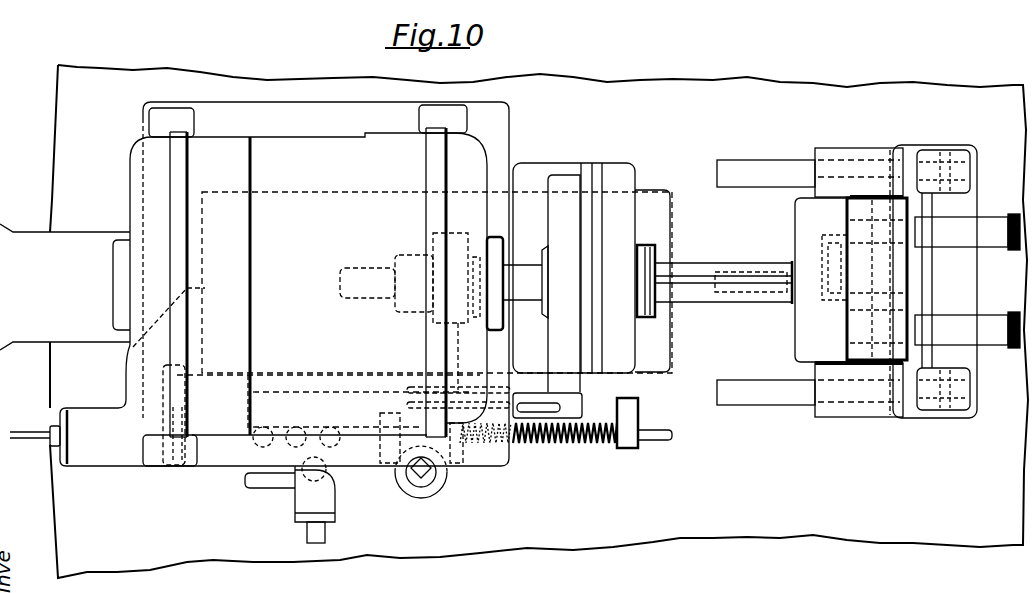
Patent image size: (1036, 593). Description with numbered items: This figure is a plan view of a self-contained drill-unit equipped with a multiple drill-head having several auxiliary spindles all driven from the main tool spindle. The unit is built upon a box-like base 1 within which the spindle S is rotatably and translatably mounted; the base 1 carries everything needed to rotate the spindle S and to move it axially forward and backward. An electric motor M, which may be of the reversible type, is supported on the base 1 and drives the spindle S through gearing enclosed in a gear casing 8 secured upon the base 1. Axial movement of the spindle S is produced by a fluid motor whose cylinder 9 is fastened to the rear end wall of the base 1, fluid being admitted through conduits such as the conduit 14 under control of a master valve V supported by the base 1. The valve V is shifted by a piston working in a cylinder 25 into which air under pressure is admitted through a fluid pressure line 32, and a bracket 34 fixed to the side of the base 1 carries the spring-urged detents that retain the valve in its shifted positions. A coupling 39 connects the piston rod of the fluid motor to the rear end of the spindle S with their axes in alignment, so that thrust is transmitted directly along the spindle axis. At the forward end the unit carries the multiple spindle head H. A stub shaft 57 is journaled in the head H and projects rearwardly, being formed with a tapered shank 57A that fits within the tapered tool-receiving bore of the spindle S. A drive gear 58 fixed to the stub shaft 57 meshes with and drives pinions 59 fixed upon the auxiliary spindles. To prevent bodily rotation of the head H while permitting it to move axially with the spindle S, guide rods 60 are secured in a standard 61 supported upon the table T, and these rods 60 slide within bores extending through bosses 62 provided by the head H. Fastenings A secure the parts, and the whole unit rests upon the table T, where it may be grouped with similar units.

The base 1 is at (650, 213).
The gear casing 8 is at (558, 228).
The cylinder 9 is at (65, 287).
The fluid pressure conduit 14 is at (246, 485).
The cylinder 25 is at (128, 405).
The fluid pressure line 32 is at (22, 430).
The bracket 34 is at (449, 480).
The coupling 39 is at (416, 252).
The stub shaft 57 is at (877, 282).
The tapered shank 57A is at (755, 270).
The drive gear 58 is at (842, 308).
The pinions 59 is at (820, 212).
The guide rods 60 is at (762, 165).
The standard 61 is at (970, 283).
The bosses 62 is at (870, 150).
The electric motor M is at (401, 295).
The spindle S is at (700, 305).
The multiple spindle head H is at (868, 288).
The table T is at (539, 321).
The master valve V is at (295, 505).
The bolts A is at (993, 216).